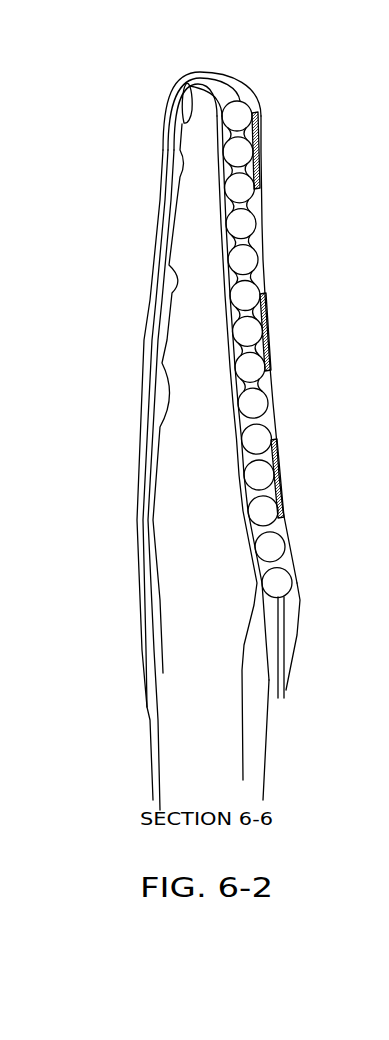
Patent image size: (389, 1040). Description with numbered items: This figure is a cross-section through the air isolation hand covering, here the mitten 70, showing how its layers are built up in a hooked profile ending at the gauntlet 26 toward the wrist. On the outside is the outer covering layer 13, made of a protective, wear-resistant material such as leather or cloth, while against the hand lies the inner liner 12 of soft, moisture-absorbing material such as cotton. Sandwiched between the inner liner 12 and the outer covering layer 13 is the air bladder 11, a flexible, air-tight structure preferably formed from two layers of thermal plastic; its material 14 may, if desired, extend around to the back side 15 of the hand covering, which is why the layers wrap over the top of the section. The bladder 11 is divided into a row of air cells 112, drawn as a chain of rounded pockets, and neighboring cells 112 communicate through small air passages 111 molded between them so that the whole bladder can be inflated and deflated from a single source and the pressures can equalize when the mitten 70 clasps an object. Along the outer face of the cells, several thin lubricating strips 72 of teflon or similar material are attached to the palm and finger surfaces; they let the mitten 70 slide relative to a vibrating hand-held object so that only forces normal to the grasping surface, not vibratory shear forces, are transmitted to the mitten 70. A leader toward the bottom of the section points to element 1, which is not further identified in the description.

The mitten 70 is at (123, 97).
The material of the air bladder 14 is at (239, 85).
The back side 15 is at (146, 330).
The air bladder 11 is at (262, 205).
The outer covering layer 13 is at (279, 419).
The inner liner 12 is at (244, 381).
The gauntlet 26 is at (268, 760).
The air cells 112 is at (247, 260).
The air passages 111 is at (262, 299).
The lubricating strips 72 is at (264, 128).
The wire 1 is at (289, 683).